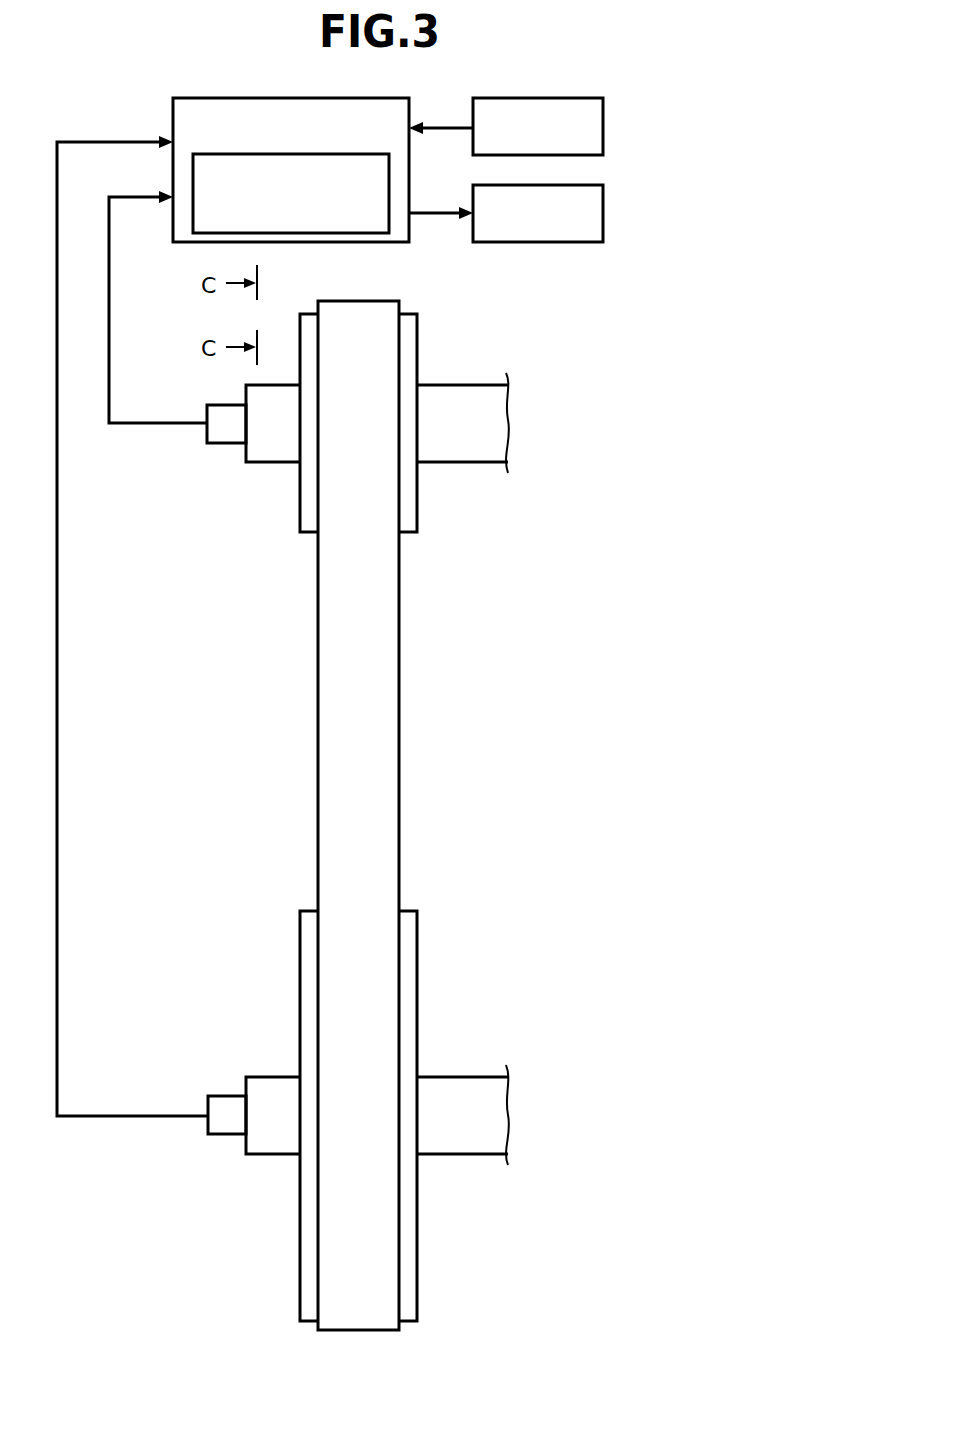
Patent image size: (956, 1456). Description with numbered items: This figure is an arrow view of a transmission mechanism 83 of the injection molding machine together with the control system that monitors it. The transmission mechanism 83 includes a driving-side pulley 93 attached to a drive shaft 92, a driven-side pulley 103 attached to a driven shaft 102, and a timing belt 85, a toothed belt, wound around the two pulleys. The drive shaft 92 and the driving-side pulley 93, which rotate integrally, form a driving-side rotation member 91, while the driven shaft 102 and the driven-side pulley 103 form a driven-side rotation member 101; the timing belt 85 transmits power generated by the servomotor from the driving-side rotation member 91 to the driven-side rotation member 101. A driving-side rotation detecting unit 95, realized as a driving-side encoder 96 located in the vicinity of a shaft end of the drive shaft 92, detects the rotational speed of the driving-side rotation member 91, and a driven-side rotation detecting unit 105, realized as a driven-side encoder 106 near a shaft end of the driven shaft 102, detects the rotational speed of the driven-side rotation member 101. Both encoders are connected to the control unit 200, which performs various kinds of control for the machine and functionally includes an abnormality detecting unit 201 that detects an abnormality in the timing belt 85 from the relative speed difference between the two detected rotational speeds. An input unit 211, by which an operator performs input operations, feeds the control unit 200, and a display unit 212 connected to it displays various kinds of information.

The control unit 200 is at (345, 96).
The abnormality detecting unit 201 is at (330, 152).
The input unit 211 is at (605, 124).
The display unit 212 is at (605, 212).
The transmission mechanism 83 is at (216, 714).
The timing belt 85 is at (400, 707).
The driving-side rotation member 91 is at (393, 476).
The drive shaft 92 is at (487, 463).
The driving-side pulley 93 is at (418, 500).
The driving-side rotation detecting unit 95 is at (216, 481).
The driving-side encoder 96 is at (222, 444).
The driven-side rotation member 101 is at (394, 1070).
The driven shaft 102 is at (475, 1077).
The driven-side pulley 103 is at (418, 953).
The driven-side rotation detecting unit 105 is at (213, 1172).
The driven-side encoder 106 is at (228, 1135).